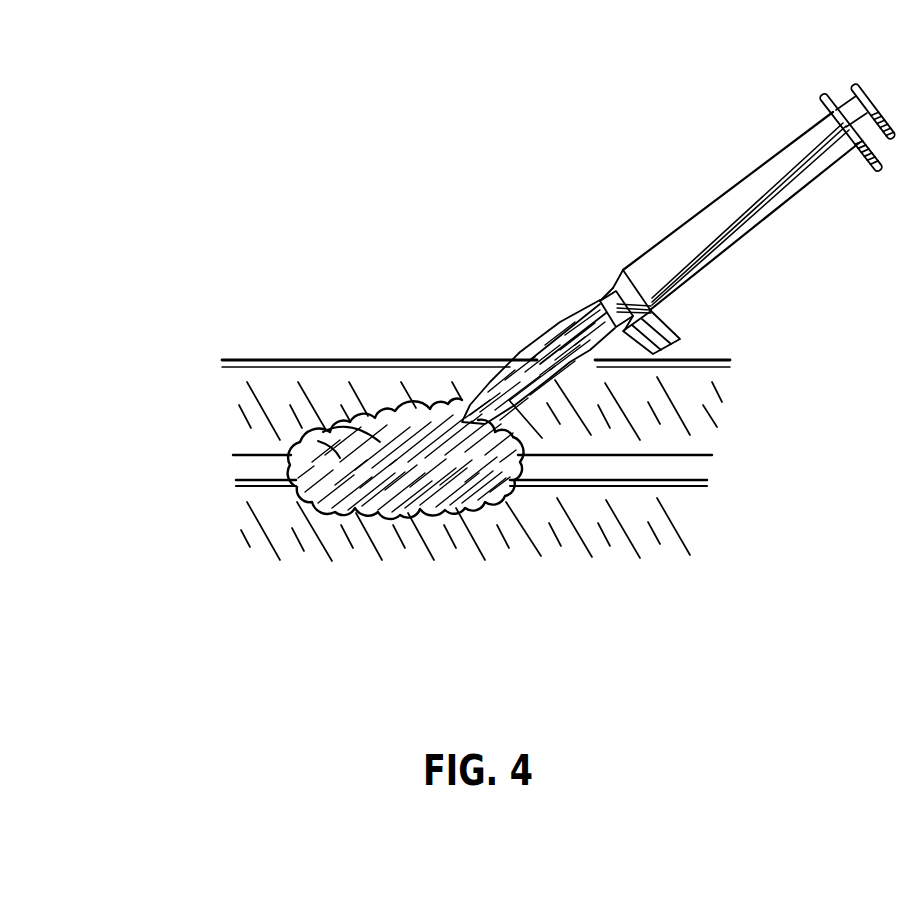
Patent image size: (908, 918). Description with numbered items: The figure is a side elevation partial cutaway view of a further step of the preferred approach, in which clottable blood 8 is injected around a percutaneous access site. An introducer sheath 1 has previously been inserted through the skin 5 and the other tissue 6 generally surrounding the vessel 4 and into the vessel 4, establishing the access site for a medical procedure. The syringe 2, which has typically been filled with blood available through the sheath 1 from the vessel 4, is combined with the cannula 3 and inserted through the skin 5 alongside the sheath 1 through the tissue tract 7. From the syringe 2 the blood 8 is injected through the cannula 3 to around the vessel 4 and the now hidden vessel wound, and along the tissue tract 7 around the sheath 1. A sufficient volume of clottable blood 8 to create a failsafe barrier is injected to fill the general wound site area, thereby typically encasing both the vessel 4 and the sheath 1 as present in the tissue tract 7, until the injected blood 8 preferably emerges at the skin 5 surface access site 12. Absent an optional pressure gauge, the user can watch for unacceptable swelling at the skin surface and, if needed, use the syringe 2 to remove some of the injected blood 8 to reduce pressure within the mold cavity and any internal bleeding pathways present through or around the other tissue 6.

The introducer sheath 1 is at (682, 340).
The syringe 2 is at (657, 243).
The cannula 3 is at (562, 335).
The vessel 4 is at (240, 482).
The skin 5 is at (210, 365).
The tissue 6 is at (730, 422).
The tissue tract 7 is at (463, 403).
The blood 8 is at (377, 443).
The access site 12 is at (527, 353).